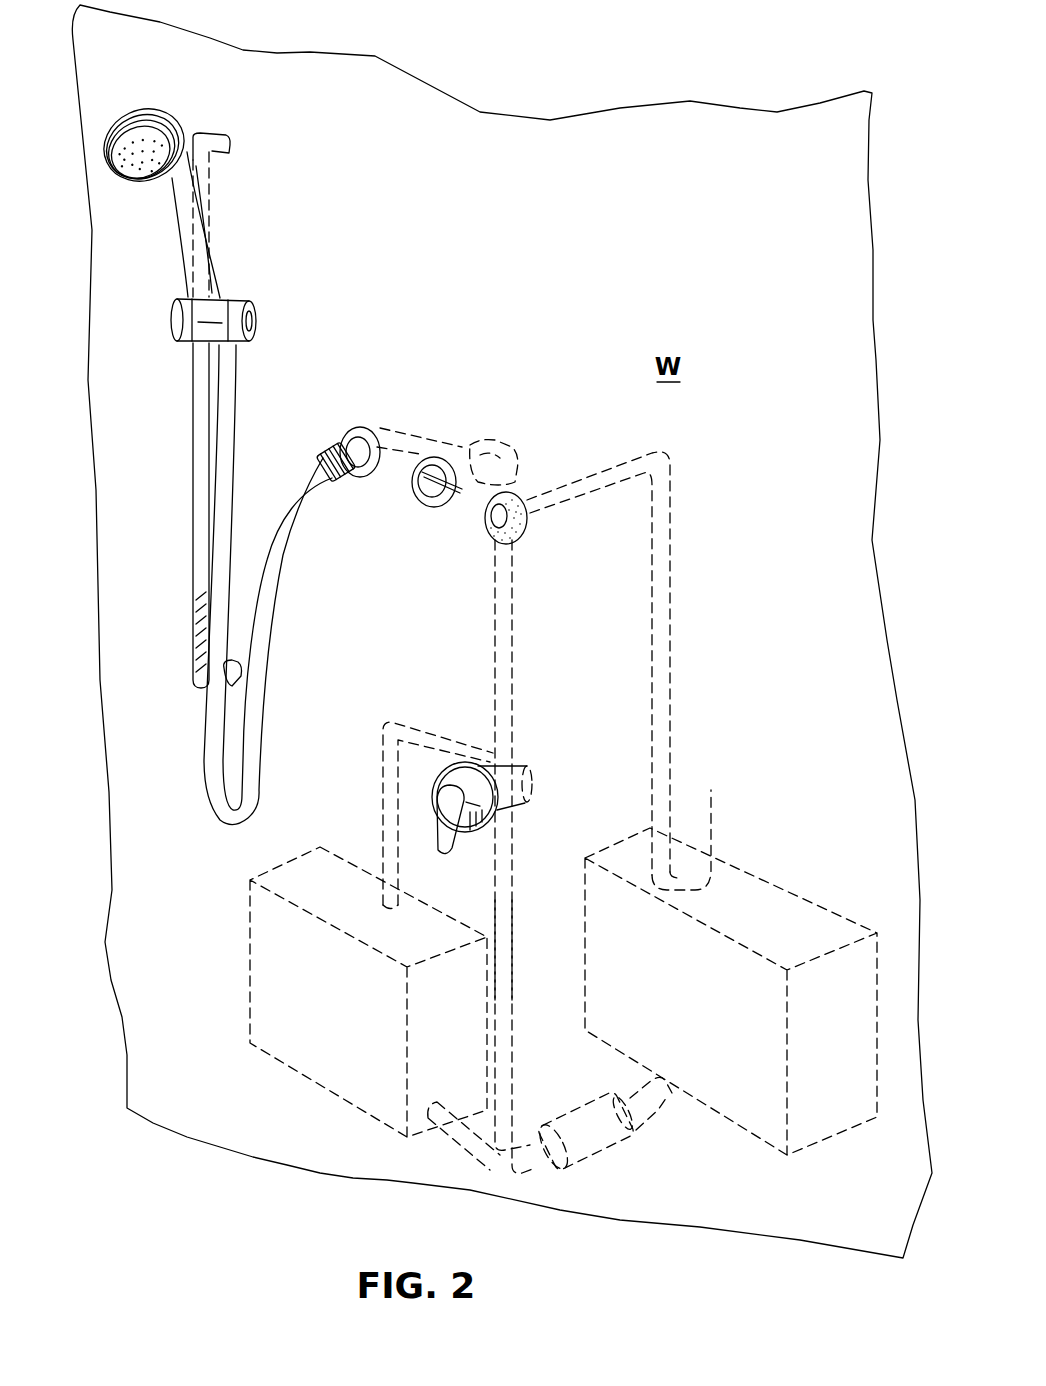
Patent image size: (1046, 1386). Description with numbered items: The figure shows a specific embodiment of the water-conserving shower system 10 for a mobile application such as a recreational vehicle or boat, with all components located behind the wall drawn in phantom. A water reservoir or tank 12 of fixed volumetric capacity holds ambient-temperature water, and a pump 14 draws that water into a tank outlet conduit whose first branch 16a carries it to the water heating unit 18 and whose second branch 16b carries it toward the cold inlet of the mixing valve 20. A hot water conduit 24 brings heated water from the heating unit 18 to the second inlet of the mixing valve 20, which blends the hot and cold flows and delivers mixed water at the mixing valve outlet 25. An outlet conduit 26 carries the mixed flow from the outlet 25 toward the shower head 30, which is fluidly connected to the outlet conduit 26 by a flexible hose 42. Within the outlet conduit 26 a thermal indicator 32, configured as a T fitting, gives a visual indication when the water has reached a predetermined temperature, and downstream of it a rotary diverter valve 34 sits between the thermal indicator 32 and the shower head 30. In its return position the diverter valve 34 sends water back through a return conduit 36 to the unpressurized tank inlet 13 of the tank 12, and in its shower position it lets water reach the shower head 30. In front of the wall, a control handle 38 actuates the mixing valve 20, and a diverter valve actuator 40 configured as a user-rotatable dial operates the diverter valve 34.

The water-conserving shower system 10 is at (544, 262).
The water reservoir or tank 12 is at (741, 897).
The tank inlet 13 is at (712, 793).
The pump 14 is at (622, 1148).
The first branch 16a is at (457, 1135).
The second branch 16b is at (513, 910).
The water heating unit 18 is at (250, 928).
The mixing valve 20 is at (528, 788).
The hot water conduit 24 is at (383, 758).
The mixing valve outlet 25 is at (513, 757).
The outlet conduit 26 is at (522, 676).
The shower head 30 is at (215, 244).
The thermal indicator 32 is at (525, 528).
The diverter valve 34 is at (471, 460).
The return conduit 36 is at (668, 637).
The control handle 38 is at (457, 838).
The diverter valve actuator 40 is at (427, 497).
The flexible hose 42 is at (232, 466).